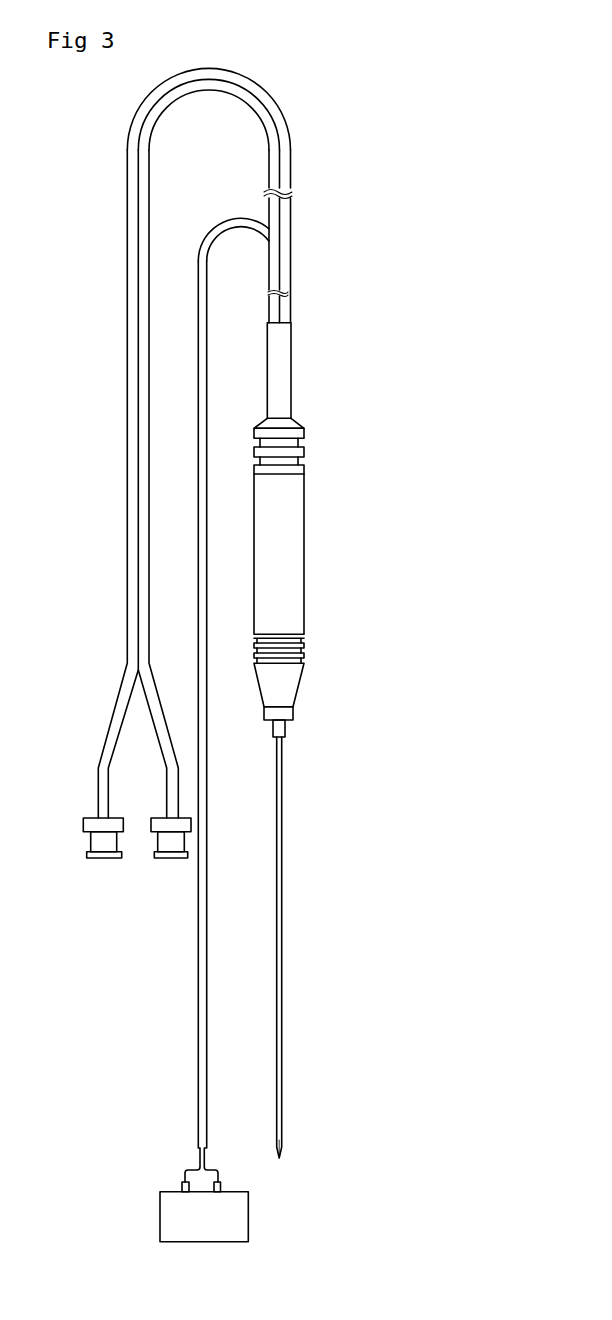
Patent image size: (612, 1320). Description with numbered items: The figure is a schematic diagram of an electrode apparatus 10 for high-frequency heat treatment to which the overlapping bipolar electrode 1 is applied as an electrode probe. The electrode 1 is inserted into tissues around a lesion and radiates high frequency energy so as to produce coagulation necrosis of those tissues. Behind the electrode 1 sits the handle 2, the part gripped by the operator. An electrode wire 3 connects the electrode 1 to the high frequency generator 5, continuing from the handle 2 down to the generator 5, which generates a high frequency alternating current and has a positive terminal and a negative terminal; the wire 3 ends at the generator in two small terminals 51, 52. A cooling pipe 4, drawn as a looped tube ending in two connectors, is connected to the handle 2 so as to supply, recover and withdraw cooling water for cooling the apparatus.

The electrode apparatus 10 is at (372, 228).
The electrode 1 is at (282, 861).
The handle 2 is at (290, 540).
The electrode wire 3 is at (202, 362).
The cooling pipe 4 is at (130, 555).
The high frequency generator 5 is at (248, 1218).
The first connector terminal 51 is at (181, 1185).
The second connector terminal 52 is at (222, 1186).